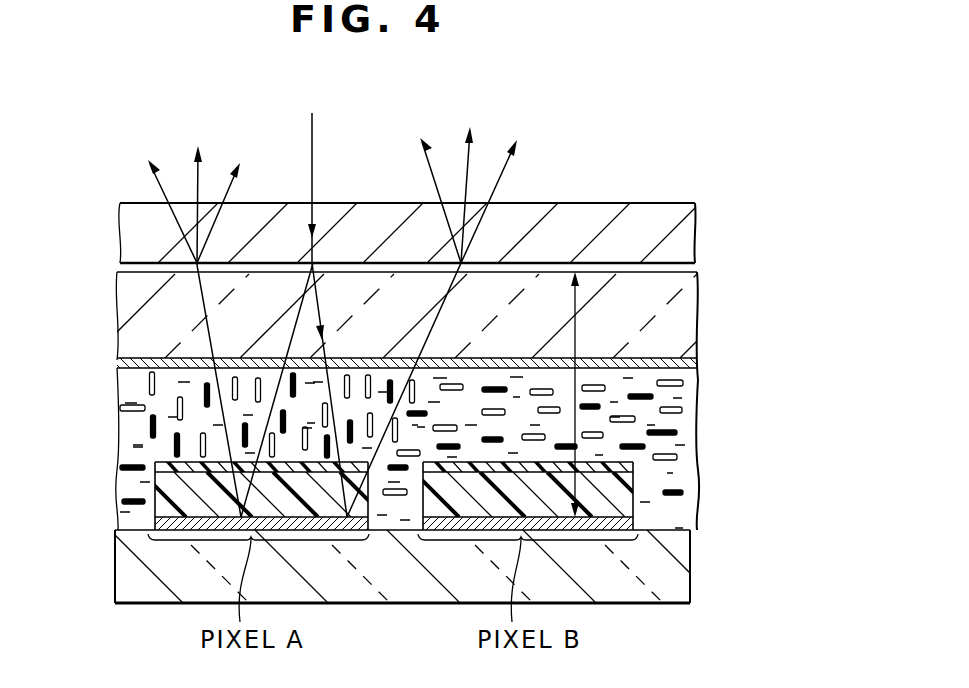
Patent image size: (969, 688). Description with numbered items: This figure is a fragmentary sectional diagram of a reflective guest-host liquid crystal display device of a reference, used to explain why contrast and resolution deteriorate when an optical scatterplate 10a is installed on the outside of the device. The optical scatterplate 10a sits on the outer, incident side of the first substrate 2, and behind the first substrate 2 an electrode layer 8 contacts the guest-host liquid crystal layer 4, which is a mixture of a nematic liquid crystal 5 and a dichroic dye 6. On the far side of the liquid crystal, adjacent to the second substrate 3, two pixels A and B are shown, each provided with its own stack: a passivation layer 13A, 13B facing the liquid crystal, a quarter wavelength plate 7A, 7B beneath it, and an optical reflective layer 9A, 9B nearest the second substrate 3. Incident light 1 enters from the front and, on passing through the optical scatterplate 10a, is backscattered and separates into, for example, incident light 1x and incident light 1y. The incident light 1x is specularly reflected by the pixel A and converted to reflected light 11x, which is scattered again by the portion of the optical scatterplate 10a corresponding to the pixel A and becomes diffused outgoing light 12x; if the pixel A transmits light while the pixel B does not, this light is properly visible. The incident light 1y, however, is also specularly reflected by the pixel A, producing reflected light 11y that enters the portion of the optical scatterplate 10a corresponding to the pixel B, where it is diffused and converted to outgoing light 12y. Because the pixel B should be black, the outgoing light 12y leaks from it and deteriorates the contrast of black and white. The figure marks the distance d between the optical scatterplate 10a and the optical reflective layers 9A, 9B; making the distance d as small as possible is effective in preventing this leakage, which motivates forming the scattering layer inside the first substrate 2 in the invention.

The incident light 1 is at (312, 137).
The incident light 1x is at (296, 309).
The incident light 1y is at (319, 311).
The reflected light 11x is at (205, 320).
The reflected light 11y is at (447, 295).
The outgoing light 12x is at (156, 176).
The outgoing light 12y is at (500, 183).
The optical scatterplate 10a is at (700, 232).
The first substrate 2 is at (700, 310).
The electrode layer 8 is at (700, 365).
The guest-host liquid crystal layer 4 is at (700, 417).
The nematic liquid crystal 5 is at (148, 383).
The dichroic dye 6 is at (150, 428).
The passivation layer 13A is at (155, 465).
The passivation layer 13B is at (633, 464).
The quarter wavelength plate 7A is at (153, 490).
The quarter wavelength plate 7B is at (645, 488).
The optical reflective layer 9A is at (153, 519).
The optical reflective layer 9B is at (645, 523).
The second substrate 3 is at (667, 578).
The distance d is at (586, 394).